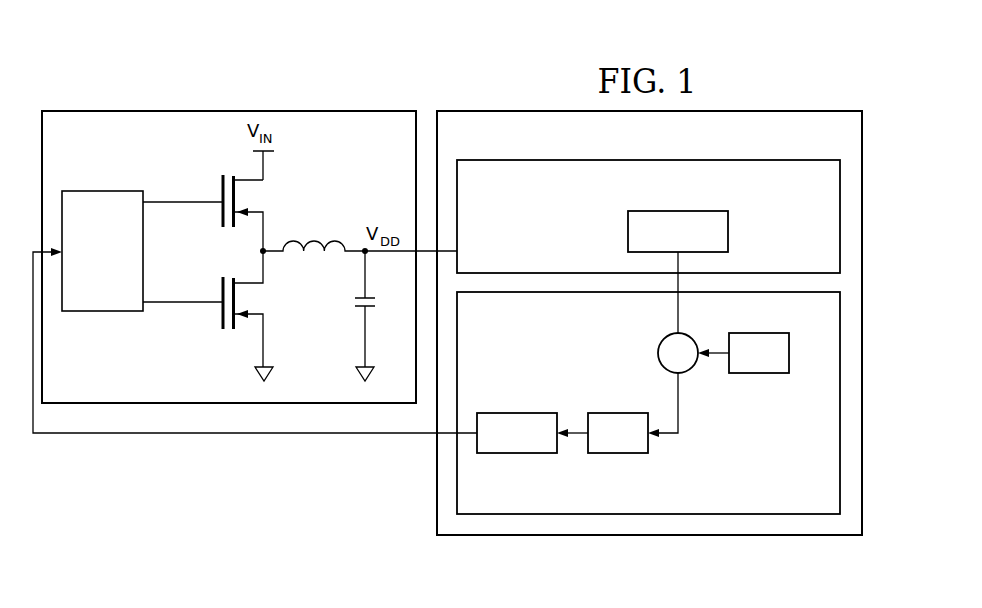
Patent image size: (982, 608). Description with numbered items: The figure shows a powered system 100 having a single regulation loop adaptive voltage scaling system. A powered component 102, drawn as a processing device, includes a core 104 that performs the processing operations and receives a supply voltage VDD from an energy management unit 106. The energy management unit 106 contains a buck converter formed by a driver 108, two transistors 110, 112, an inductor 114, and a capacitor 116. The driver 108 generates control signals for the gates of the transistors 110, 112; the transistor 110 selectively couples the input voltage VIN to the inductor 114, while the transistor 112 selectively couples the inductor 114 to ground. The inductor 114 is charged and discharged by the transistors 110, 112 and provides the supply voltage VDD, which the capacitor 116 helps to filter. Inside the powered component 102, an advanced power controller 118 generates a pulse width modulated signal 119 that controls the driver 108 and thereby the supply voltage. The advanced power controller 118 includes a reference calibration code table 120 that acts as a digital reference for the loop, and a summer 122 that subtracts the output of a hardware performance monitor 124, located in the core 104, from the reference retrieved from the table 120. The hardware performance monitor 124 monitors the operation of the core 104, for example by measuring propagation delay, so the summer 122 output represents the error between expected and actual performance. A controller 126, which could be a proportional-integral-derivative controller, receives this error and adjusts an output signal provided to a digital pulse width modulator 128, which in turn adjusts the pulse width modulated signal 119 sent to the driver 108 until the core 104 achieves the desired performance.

The powered system 100 is at (248, 64).
The powered component 102 is at (754, 105).
The core 104 is at (742, 203).
The energy management unit 106 is at (96, 104).
The driver 108 is at (101, 312).
The transistor 110 is at (222, 192).
The transistor 112 is at (222, 314).
The inductor 114 is at (323, 236).
The capacitor 116 is at (354, 302).
The advanced power controller 118 is at (587, 383).
The pulse width modulated signal 119 is at (240, 434).
The reference calibration code table 120 is at (760, 374).
The summer 122 is at (660, 365).
The hardware performance monitor 124 is at (627, 230).
The controller 126 is at (618, 454).
The digital pulse width modulator 128 is at (517, 454).